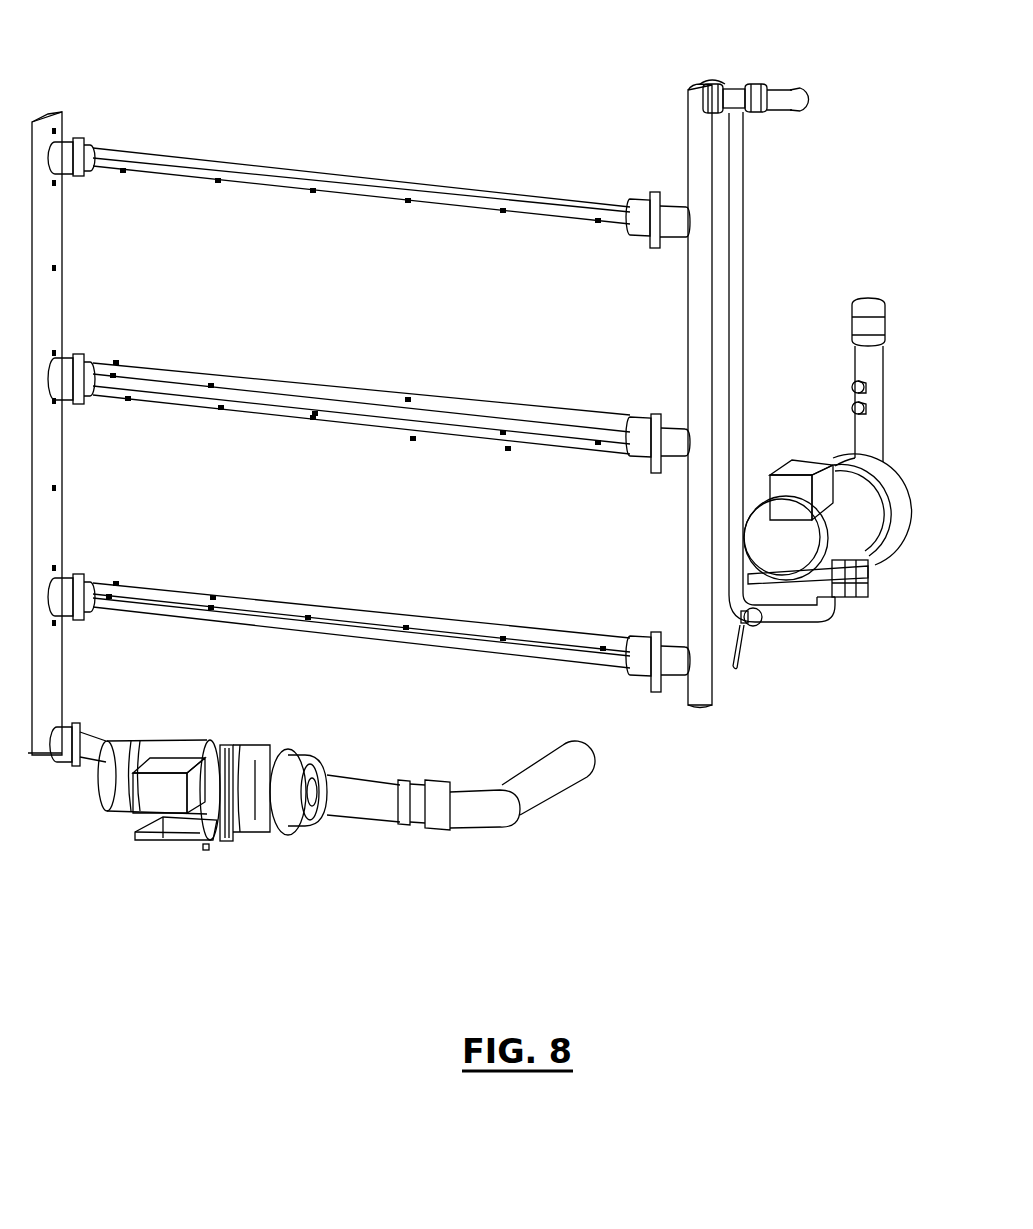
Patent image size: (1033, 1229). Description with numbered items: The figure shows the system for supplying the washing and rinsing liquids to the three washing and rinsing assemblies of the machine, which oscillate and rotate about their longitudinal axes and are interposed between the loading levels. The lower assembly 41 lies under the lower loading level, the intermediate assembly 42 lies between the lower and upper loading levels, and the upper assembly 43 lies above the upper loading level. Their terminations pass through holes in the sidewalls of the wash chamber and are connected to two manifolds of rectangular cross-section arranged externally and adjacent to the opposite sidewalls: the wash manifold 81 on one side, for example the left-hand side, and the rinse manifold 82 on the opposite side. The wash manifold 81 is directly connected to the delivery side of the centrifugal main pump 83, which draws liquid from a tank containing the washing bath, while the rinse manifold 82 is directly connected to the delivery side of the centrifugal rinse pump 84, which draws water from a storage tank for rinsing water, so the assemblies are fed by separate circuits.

The lower assembly 41 is at (255, 605).
The intermediate assembly 42 is at (255, 398).
The upper assembly 43 is at (255, 183).
The wash manifold 81 is at (50, 515).
The rinse manifold 82 is at (707, 180).
The centrifugal main pump 83 is at (180, 760).
The centrifugal rinse pump 84 is at (797, 530).